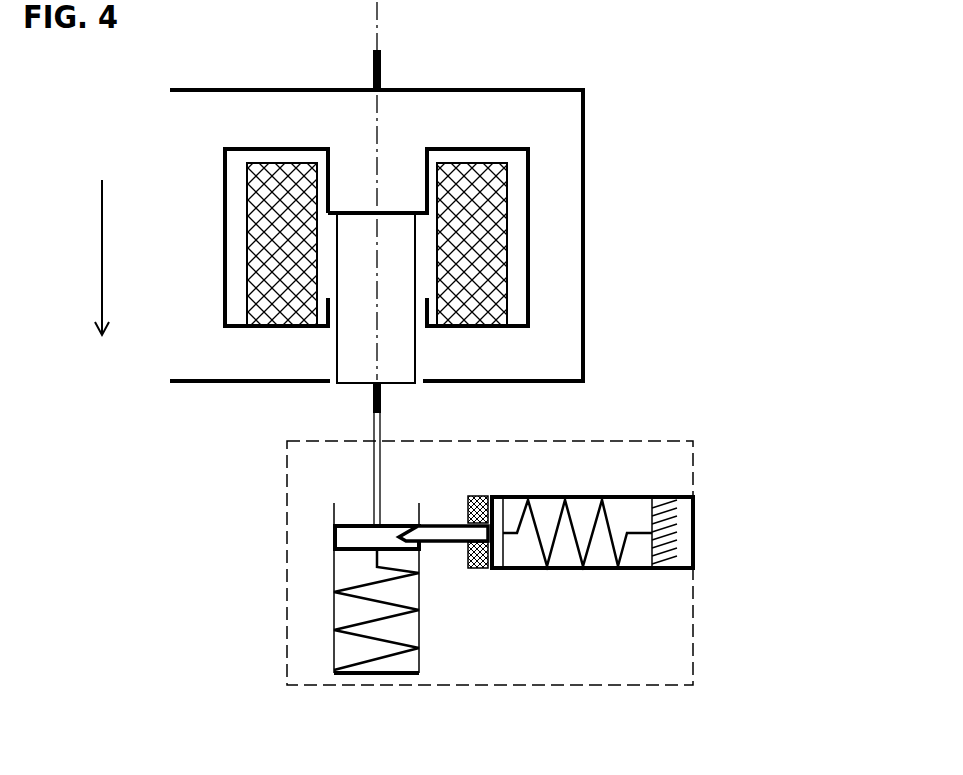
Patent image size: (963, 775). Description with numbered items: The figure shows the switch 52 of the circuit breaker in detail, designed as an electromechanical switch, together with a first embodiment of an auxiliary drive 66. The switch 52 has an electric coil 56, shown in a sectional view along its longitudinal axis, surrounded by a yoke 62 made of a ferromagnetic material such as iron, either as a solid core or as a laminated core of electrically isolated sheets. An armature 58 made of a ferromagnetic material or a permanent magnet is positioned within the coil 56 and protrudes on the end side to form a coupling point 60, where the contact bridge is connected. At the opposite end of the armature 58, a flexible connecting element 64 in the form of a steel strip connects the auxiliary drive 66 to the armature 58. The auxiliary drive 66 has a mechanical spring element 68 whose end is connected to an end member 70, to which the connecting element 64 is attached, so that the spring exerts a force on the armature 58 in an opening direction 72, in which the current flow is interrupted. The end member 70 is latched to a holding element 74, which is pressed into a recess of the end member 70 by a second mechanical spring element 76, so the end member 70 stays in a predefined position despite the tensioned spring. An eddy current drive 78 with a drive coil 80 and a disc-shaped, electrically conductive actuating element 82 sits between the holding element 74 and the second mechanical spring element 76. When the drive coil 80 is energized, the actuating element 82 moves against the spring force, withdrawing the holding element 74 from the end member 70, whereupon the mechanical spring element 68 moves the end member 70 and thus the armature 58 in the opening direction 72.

The switch 52 is at (507, 230).
The electric coil 56 is at (487, 243).
The armature 58 is at (357, 368).
The coupling point 60 is at (372, 88).
The yoke 62 is at (265, 88).
The flexible connecting element 64 is at (373, 470).
The auxiliary drive 66 is at (693, 470).
The mechanical spring element 68 is at (363, 598).
The end member 70 is at (350, 538).
The opening direction 72 is at (102, 270).
The holding element 74 is at (447, 522).
The second mechanical spring element 76 is at (610, 523).
The eddy current drive 78 is at (472, 583).
The drive coil 80 is at (478, 565).
The actuating element 82 is at (500, 548).